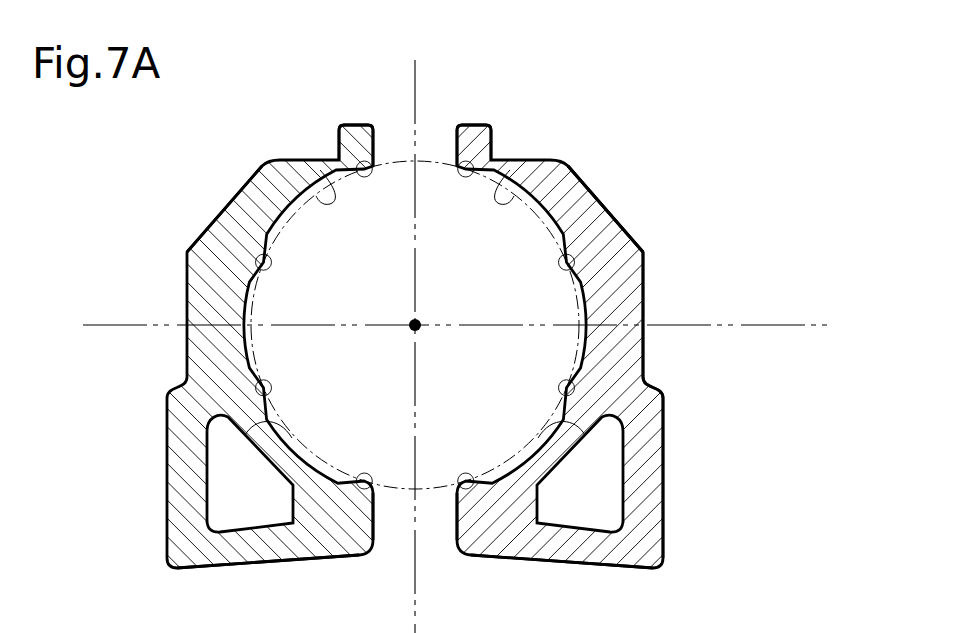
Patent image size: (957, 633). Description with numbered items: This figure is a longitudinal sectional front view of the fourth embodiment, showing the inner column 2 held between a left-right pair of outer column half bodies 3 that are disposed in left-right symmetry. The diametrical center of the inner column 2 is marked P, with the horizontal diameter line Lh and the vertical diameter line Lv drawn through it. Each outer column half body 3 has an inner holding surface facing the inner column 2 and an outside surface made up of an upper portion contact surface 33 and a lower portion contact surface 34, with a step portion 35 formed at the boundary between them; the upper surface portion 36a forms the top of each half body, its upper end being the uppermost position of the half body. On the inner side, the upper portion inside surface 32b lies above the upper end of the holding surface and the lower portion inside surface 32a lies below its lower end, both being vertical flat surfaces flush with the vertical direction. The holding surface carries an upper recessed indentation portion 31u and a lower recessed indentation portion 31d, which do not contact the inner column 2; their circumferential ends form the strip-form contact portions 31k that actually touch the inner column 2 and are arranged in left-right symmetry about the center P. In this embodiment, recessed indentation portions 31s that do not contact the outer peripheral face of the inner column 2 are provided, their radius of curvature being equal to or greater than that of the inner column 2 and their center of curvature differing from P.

The inner column 2 is at (427, 160).
The outer column half body 3 is at (233, 201).
The recessed indentation portion 31s is at (320, 170).
The upper recessed indentation portion 31u is at (264, 228).
The strip-form contact portion 31k is at (366, 178).
The lower recessed indentation portion 31d is at (318, 474).
The lower portion inside surface 32a is at (457, 518).
The upper portion inside surface 32b is at (457, 150).
The upper portion contact surface 33 is at (643, 317).
The lower portion contact surface 34 is at (664, 486).
The step portion 35 is at (652, 392).
The upper surface portion 36a is at (637, 247).
The diametrical center P is at (422, 322).
The vertical diameter line Lv is at (413, 80).
The horizontal diameter line Lh is at (806, 325).